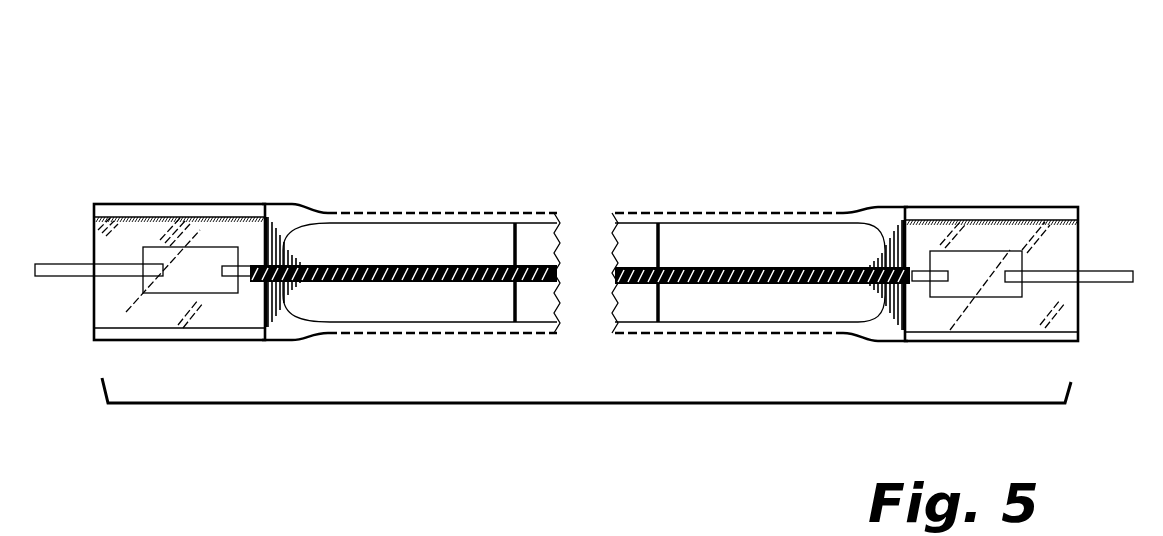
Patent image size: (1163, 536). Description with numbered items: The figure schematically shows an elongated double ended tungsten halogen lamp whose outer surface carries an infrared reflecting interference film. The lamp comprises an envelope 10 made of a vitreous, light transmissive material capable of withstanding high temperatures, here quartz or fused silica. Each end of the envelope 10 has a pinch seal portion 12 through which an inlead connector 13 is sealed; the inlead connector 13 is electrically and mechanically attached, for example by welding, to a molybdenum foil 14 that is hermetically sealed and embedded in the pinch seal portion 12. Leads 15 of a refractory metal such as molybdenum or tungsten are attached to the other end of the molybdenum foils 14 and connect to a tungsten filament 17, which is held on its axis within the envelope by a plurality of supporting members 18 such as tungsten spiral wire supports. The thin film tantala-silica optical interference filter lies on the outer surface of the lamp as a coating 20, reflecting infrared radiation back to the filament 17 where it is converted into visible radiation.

The envelope 10 is at (893, 84).
The pinch seal portion 12 is at (118, 204).
The inlead connector 13 is at (36, 265).
The molybdenum foil 14 is at (200, 248).
The lead 15 is at (243, 266).
The tungsten filament 17 is at (736, 268).
The supporting member 18 is at (511, 223).
The coating 20 is at (338, 213).